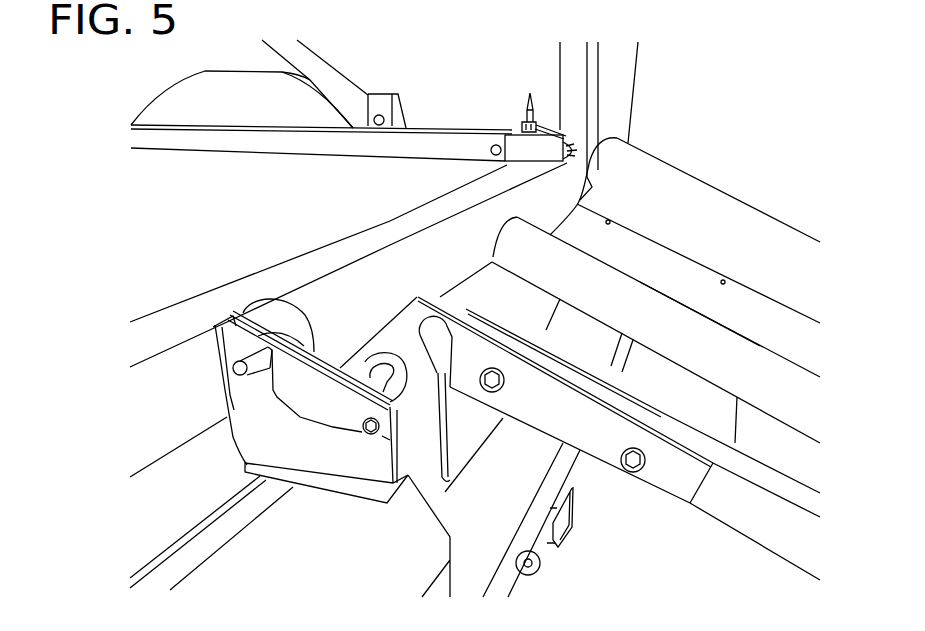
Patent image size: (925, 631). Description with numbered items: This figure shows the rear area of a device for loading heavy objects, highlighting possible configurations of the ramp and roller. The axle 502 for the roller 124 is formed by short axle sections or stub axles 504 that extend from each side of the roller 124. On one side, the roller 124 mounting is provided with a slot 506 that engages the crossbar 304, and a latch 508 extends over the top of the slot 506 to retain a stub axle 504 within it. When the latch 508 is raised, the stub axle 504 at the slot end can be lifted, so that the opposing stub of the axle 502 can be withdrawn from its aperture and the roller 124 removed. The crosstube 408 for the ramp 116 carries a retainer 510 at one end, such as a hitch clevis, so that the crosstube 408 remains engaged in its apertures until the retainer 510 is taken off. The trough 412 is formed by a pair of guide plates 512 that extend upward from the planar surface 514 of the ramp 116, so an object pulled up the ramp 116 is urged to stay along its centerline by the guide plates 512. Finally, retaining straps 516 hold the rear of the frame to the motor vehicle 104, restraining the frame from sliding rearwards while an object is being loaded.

The motor vehicle 104 is at (630, 73).
The ramp 116 is at (740, 522).
The roller 124 is at (367, 270).
The crossbar 304 is at (147, 386).
The crosstube 408 is at (397, 349).
The trough 412 is at (760, 313).
The axle 502 is at (213, 327).
The stub axle 504 is at (222, 385).
The slot 506 is at (265, 382).
The latch 508 is at (303, 373).
The retainer 510 is at (403, 393).
The guide plate 512 is at (773, 230).
The planar surface 514 is at (667, 267).
The retaining strap 516 is at (555, 133).